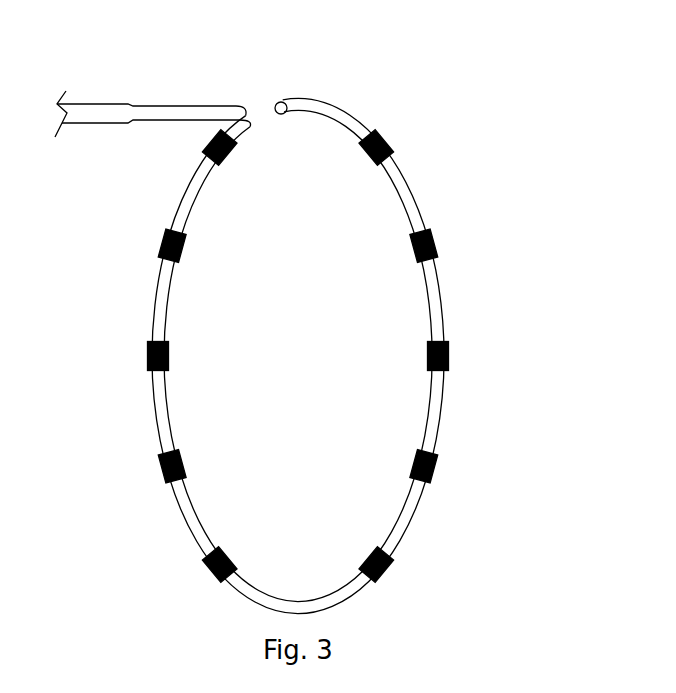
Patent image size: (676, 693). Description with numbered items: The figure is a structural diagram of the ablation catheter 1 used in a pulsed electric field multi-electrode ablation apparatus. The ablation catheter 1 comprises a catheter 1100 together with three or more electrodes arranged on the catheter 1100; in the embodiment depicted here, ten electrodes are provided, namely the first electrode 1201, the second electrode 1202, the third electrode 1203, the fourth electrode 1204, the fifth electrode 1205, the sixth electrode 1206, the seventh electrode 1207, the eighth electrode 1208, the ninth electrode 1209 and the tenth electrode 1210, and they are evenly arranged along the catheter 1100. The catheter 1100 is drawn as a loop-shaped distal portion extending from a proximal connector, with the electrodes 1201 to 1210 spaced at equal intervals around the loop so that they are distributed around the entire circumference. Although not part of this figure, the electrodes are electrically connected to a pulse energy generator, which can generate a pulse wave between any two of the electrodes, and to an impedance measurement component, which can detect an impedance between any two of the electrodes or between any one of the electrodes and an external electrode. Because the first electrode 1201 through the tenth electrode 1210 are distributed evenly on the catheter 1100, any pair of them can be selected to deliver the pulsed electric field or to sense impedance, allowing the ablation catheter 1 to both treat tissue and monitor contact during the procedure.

The ablation catheter 1 is at (222, 78).
The catheter 1100 is at (317, 105).
The first electrode 1201 is at (391, 142).
The second electrode 1202 is at (436, 245).
The third electrode 1203 is at (451, 350).
The fourth electrode 1204 is at (439, 457).
The fifth electrode 1205 is at (388, 574).
The sixth electrode 1206 is at (209, 571).
The seventh electrode 1207 is at (161, 464).
The eighth electrode 1208 is at (148, 355).
The ninth electrode 1209 is at (159, 248).
The tenth electrode 1210 is at (208, 150).